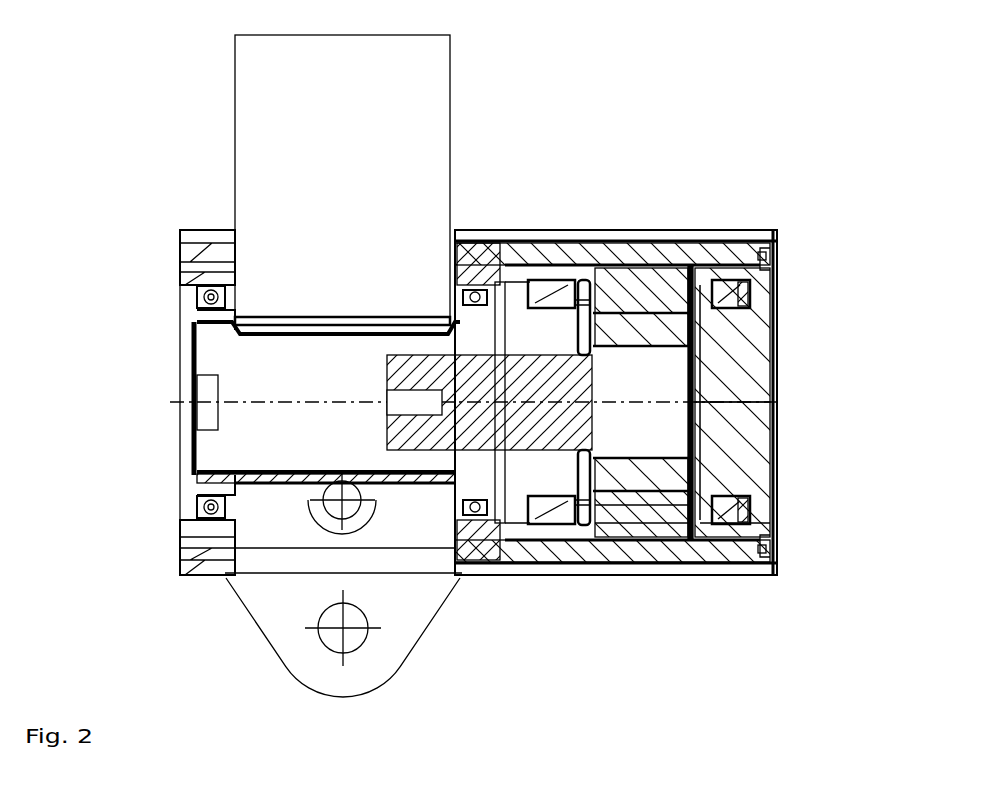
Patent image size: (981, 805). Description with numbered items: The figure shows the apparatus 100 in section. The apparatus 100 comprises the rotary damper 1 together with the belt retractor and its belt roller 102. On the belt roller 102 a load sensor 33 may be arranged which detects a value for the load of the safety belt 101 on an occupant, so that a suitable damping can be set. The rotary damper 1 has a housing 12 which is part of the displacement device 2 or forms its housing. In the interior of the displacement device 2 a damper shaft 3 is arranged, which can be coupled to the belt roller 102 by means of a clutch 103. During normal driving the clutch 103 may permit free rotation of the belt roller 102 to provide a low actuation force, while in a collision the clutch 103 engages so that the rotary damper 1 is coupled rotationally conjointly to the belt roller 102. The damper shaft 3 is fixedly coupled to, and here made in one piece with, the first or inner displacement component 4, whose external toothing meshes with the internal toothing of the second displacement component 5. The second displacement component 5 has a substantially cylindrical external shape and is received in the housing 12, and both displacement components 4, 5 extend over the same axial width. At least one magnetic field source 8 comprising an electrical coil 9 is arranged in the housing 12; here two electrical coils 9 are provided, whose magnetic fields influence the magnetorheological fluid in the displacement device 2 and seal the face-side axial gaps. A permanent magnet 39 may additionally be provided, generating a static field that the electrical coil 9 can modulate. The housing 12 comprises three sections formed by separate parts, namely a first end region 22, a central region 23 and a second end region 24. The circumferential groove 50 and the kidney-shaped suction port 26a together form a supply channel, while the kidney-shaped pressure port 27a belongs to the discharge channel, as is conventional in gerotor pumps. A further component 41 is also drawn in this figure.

The apparatus 100 is at (768, 75).
The safety belt 101 is at (265, 113).
The belt roller 102 is at (205, 322).
The clutch 103 is at (485, 575).
The load sensor 33 is at (205, 383).
The damper shaft 3 is at (405, 388).
The rotary damper 1 is at (757, 218).
The displacement device 2 is at (643, 230).
The housing 12 is at (780, 285).
The first end region 22 is at (553, 530).
The ring gear 41 is at (690, 250).
The first displacement component 4 is at (690, 430).
The kidney-shaped suction port 26a is at (585, 290).
The kidney-shaped pressure port 27a is at (690, 475).
The circumferential groove 50 is at (592, 530).
The electrical coil 9 is at (545, 285).
The permanent magnet 39 is at (745, 300).
The magnetic field source 8 is at (723, 320).
The second displacement component 5 is at (630, 520).
The central region 23 is at (655, 525).
The second end region 24 is at (727, 522).